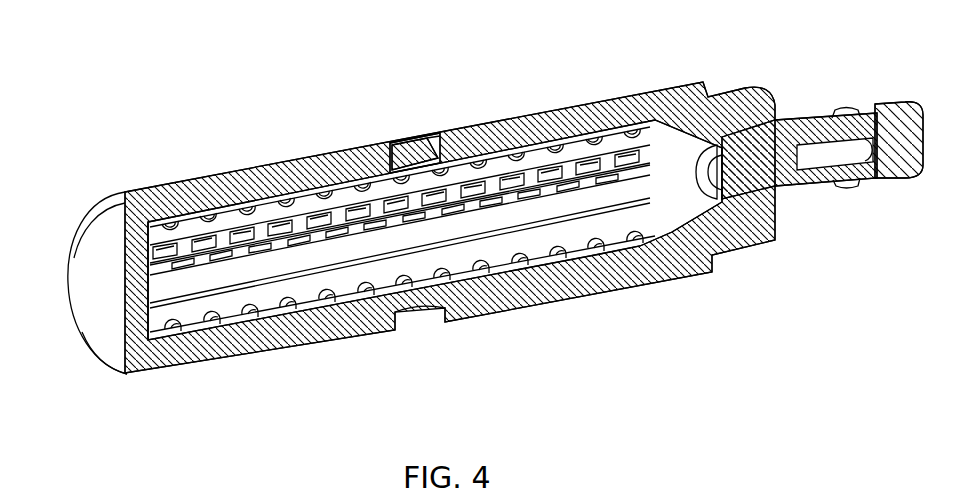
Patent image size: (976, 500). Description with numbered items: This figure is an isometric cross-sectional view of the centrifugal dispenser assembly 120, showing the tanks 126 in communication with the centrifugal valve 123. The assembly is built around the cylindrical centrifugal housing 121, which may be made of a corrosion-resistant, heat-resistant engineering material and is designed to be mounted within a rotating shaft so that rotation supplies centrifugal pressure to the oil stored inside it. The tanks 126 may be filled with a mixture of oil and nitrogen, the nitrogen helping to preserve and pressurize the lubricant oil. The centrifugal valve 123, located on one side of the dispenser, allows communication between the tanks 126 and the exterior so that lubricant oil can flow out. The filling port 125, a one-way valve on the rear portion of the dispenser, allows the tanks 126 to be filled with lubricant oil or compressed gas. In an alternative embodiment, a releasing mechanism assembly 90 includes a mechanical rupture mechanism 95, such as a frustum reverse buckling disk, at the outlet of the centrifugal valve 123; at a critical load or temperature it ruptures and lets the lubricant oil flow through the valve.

The releasing mechanism assembly 90 is at (399, 137).
The mechanical rupture mechanism 95 is at (412, 132).
The centrifugal dispenser assembly 120 is at (115, 191).
The centrifugal housing 121 is at (97, 255).
The centrifugal valve 123 is at (423, 140).
The filling port 125 is at (808, 118).
The tanks 126 is at (597, 250).